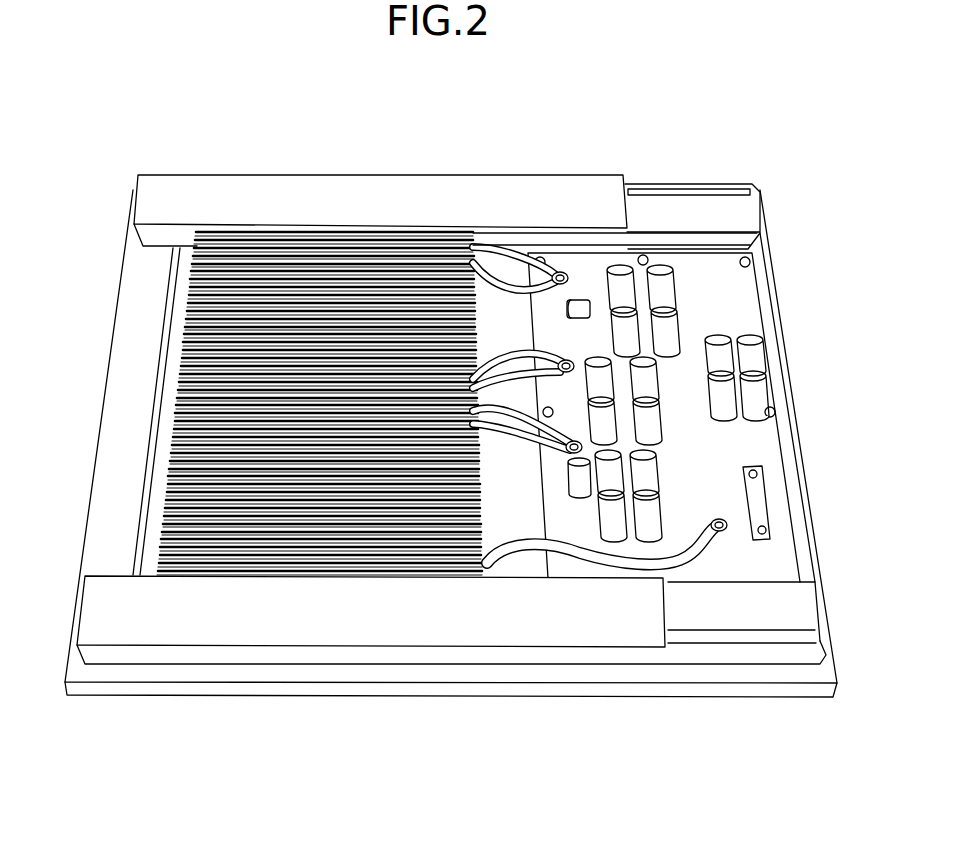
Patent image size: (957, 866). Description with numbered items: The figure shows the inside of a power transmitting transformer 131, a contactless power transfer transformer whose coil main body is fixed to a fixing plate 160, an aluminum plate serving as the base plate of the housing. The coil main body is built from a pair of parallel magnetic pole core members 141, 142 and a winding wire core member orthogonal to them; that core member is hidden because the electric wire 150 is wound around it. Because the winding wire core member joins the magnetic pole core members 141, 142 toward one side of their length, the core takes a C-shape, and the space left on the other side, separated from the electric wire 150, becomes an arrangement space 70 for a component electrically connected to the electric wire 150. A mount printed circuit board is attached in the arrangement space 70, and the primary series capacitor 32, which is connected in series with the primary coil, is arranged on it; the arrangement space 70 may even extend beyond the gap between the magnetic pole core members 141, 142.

The power transmitting transformer 131 is at (529, 127).
The magnetic pole core member 141 is at (314, 196).
The magnetic pole core member 142 is at (337, 627).
The electric wire 150 is at (227, 325).
The arrangement space 70 is at (702, 278).
The primary series capacitor 32 is at (658, 278).
The fixing plate 160 is at (805, 673).